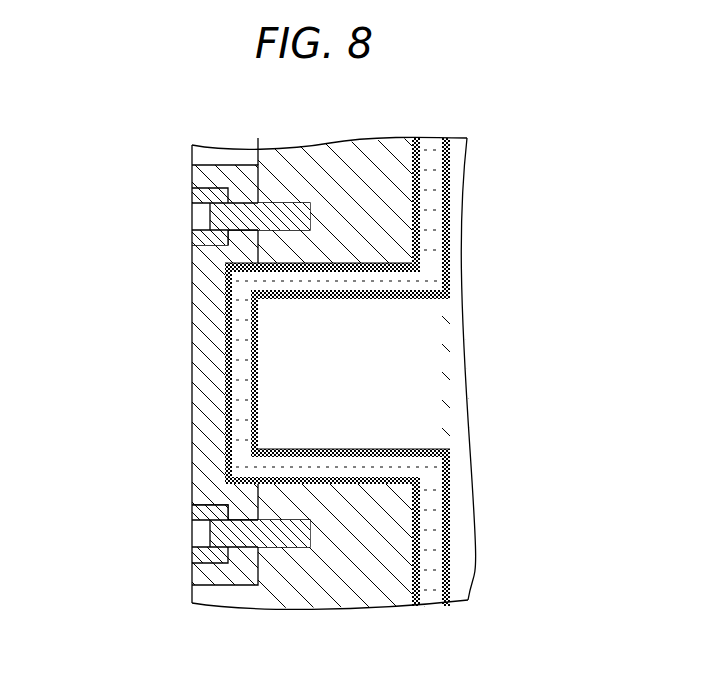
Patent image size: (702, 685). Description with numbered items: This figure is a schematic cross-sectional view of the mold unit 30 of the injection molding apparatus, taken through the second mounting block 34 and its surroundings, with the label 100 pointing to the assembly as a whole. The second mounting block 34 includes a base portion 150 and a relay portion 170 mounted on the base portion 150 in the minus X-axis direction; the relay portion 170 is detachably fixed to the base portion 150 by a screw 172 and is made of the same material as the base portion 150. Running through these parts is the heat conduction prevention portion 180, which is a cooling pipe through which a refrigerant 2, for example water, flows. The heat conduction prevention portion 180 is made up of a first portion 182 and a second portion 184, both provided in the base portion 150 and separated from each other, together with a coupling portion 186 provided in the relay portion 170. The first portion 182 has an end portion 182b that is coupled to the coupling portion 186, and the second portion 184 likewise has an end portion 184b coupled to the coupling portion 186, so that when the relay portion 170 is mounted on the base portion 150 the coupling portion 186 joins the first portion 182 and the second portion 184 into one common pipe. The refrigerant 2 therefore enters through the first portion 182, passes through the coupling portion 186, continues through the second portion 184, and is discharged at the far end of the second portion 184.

The refrigerant 2 is at (364, 290).
The mold unit 30 is at (490, 149).
The second mounting block 34 is at (168, 136).
The light emitting element 100 is at (493, 113).
The base portion 150 is at (432, 376).
The relay portion 170 is at (213, 320).
The screw 172 is at (213, 220).
The heat conduction prevention portion 180 is at (262, 372).
The first portion 182 is at (226, 322).
The end portion 182b is at (230, 281).
The second portion 184 is at (250, 408).
The end portion 184b is at (242, 464).
The coupling portion 186 is at (240, 374).